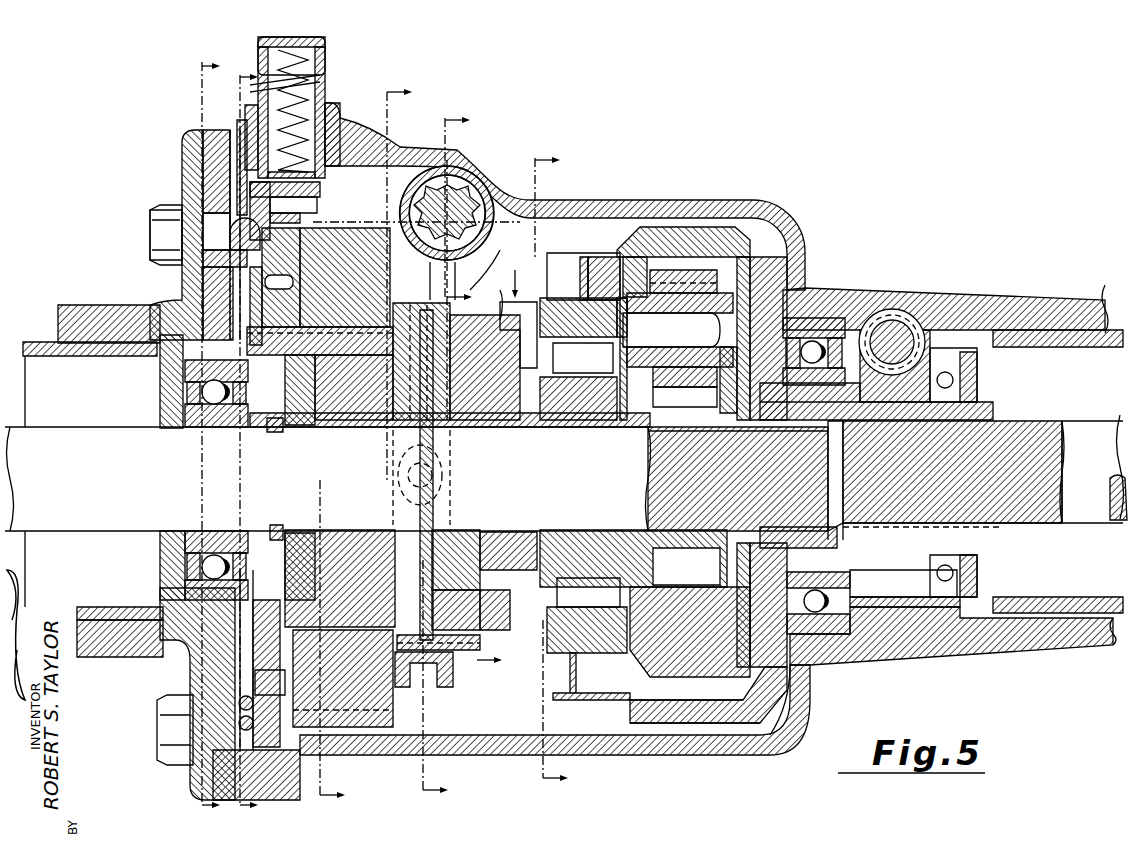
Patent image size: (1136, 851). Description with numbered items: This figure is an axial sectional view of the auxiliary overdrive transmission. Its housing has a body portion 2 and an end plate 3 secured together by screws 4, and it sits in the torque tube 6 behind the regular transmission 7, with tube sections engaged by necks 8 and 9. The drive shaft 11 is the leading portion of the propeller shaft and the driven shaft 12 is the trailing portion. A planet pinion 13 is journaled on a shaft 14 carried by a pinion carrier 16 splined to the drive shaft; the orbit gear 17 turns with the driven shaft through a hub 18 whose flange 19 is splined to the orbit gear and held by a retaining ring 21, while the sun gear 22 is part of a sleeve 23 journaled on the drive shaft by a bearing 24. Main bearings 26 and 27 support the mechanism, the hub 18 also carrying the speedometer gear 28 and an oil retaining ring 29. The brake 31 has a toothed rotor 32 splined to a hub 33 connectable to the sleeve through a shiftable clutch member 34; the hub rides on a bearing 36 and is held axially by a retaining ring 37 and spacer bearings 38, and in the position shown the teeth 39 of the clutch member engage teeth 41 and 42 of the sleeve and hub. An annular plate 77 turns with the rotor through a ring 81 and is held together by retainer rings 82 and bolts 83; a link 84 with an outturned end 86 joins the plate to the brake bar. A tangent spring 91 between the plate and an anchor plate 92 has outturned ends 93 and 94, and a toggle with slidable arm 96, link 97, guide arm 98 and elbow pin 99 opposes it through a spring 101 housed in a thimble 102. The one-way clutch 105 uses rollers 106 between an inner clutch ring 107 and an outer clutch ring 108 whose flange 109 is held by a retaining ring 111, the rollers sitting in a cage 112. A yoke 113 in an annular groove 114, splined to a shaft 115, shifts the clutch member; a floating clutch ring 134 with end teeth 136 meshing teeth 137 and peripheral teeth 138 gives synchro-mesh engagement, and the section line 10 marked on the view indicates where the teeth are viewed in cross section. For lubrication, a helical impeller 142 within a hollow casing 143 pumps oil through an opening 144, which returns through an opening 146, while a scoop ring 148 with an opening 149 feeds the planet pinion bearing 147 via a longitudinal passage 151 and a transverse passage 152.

The body portion 2 is at (678, 218).
The end plate 3 is at (182, 152).
The screws 4 is at (150, 232).
The torque tube 6 is at (1058, 347).
The regular transmission 7 is at (239, 443).
The neck 8 is at (1055, 300).
The neck 9 is at (76, 312).
The section line 10-10 / spindle 10 is at (474, 419).
The drive shaft 11 is at (113, 524).
The driven shaft 12 is at (1085, 535).
The planet pinion 13 is at (754, 268).
The shaft 14 is at (676, 356).
The pinion carrier 16 is at (740, 357).
The orbit gear 17 is at (700, 235).
The hub 18 is at (862, 565).
The flange 19 is at (800, 680).
The retaining ring 21 is at (795, 700).
The sun gear 22 is at (686, 427).
The sleeve 23 is at (507, 427).
The bearing 24 is at (525, 425).
The main bearing 26 is at (214, 405).
The main bearing 27 is at (812, 340).
The speedometer gear 28 is at (896, 565).
The oil retaining ring 29 is at (977, 570).
The brake 31 is at (398, 710).
The rotor 32 is at (363, 700).
The hub 33 is at (330, 427).
The clutch member 34 is at (453, 683).
The bearing 36 is at (368, 427).
The retaining ring 37 is at (277, 525).
The spacer bearings 38 is at (440, 525).
The teeth 39 is at (451, 281).
The teeth 41 is at (488, 270).
The teeth 42 is at (392, 315).
The annular plate 77 is at (237, 193).
The ring 81 is at (280, 320).
The retainer rings 82 is at (265, 648).
The bolts 83 is at (278, 680).
The link 84 is at (293, 282).
The outturned end 86 is at (275, 268).
The tangent spring 91 is at (250, 735).
The anchor plate 92 is at (218, 682).
The outturned end 93 is at (231, 240).
The outturned end 94 is at (203, 275).
The slidable arm 96 is at (268, 157).
The link 97 is at (270, 214).
The guide arm 98 is at (317, 207).
The elbow pin 99 is at (320, 195).
The spring 101 is at (325, 92).
The thimble 102 is at (325, 55).
The one-way clutch 105 is at (598, 430).
The rollers 106 is at (598, 375).
The inner clutch ring 107 is at (610, 578).
The outer clutch ring 108 is at (656, 611).
The flange 109 is at (620, 680).
The retaining ring 111 is at (625, 725).
The cage 112 is at (588, 653).
The yoke 113 is at (440, 455).
The annular groove 114 is at (430, 680).
The shaft 115 is at (470, 175).
The floating clutch ring 134 is at (478, 360).
The end teeth 136 is at (578, 317).
The teeth 137 is at (496, 325).
The peripheral teeth 138 is at (519, 303).
The helical impeller 142 is at (562, 270).
The hollow casing 143 is at (593, 260).
The opening 144 is at (612, 275).
The opening 146 is at (760, 600).
The planet pinion bearing 147 is at (670, 277).
The scoop ring 148 is at (640, 636).
The opening 149 is at (627, 313).
The longitudinal passage 151 is at (695, 380).
The transverse passage 152 is at (683, 347).